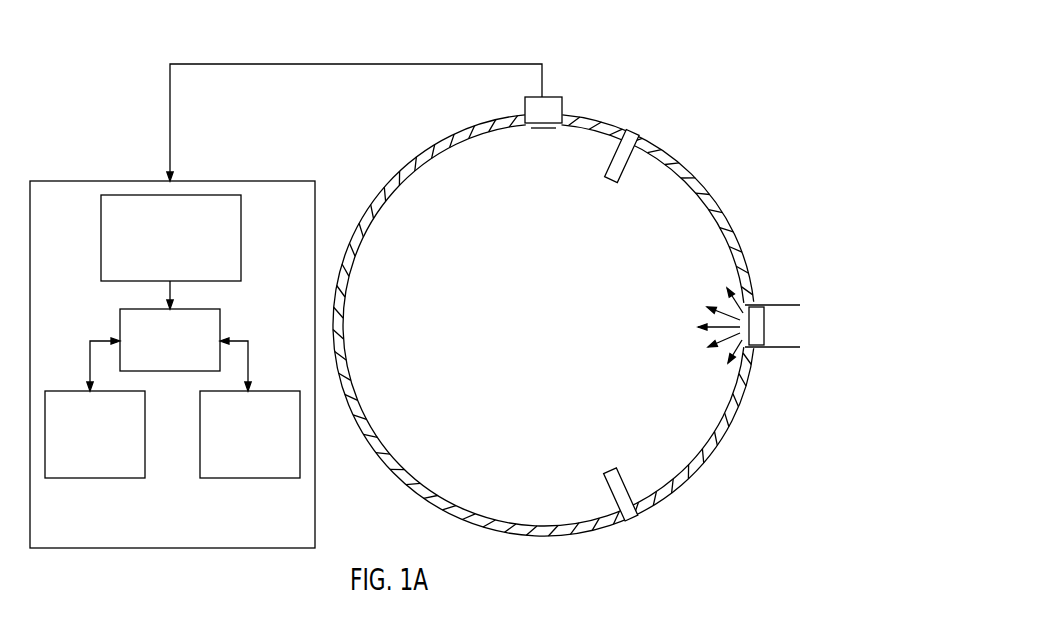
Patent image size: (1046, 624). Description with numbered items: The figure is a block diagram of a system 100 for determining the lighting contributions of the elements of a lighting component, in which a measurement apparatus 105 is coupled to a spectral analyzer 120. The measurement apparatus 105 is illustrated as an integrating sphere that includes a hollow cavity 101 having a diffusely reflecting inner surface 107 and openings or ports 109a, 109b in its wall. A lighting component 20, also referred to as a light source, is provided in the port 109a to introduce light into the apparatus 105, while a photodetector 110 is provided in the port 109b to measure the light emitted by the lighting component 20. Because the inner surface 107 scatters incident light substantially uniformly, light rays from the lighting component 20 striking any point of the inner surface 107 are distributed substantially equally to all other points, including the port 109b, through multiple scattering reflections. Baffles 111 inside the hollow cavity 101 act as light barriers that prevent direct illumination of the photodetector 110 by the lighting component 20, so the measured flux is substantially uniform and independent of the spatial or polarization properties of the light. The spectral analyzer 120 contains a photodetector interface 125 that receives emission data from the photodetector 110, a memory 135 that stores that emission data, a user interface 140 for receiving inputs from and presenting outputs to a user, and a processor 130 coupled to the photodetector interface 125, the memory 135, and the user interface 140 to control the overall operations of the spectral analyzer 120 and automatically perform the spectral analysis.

The system 100 is at (672, 81).
The spectral analyzer 120 is at (190, 539).
The photodetector interface 125 is at (184, 271).
The processor 130 is at (183, 361).
The memory 135 is at (108, 456).
The user interface 140 is at (265, 466).
The photodetector 110 is at (552, 98).
The measurement apparatus 105 is at (558, 357).
The inner surface 107 is at (688, 176).
The hollow cavity 101 is at (665, 277).
The port 109b is at (532, 132).
The port 109a is at (780, 338).
The baffles 111 is at (606, 178).
The lighting component 20 is at (757, 315).